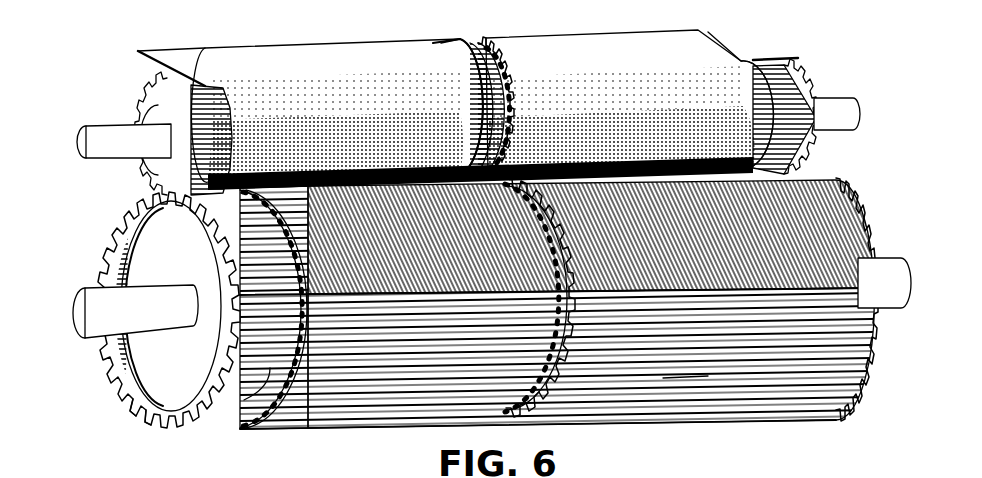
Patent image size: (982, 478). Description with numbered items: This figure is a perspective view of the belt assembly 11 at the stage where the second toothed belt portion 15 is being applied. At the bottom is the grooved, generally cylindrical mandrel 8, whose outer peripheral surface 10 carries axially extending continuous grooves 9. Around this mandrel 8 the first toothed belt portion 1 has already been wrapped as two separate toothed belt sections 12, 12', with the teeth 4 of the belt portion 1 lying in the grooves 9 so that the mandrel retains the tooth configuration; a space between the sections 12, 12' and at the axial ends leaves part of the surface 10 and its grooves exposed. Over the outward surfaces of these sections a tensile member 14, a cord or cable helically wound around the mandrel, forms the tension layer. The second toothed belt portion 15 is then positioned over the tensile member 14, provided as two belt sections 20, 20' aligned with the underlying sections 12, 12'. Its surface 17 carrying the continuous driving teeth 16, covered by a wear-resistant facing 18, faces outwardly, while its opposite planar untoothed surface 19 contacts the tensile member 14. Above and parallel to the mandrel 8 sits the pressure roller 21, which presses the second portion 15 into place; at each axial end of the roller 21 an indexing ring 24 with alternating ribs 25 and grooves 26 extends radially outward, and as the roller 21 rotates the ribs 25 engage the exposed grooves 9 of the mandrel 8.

The toothed belt portion 1 is at (222, 280).
The teeth 4 is at (235, 392).
The mandrel 8 is at (167, 420).
The grooves 9 is at (162, 418).
The outer peripheral surface 10 is at (538, 416).
The belt assembly 11 is at (818, 162).
The toothed belt section 12 is at (537, 307).
The toothed belt section 12' is at (724, 318).
The tensile member 14 is at (210, 240).
The second toothed belt portion 15 is at (382, 40).
The driving teeth 16 is at (470, 52).
The surface 17 is at (432, 42).
The wear-resistant facing 18 is at (420, 363).
The untoothed surface 19 is at (230, 58).
The belt section 20 is at (532, 92).
The belt section 20' is at (536, 427).
The pressure roller 21 is at (788, 48).
The ring 24 is at (190, 72).
The ribs 25 is at (145, 172).
The grooves 26 is at (140, 103).